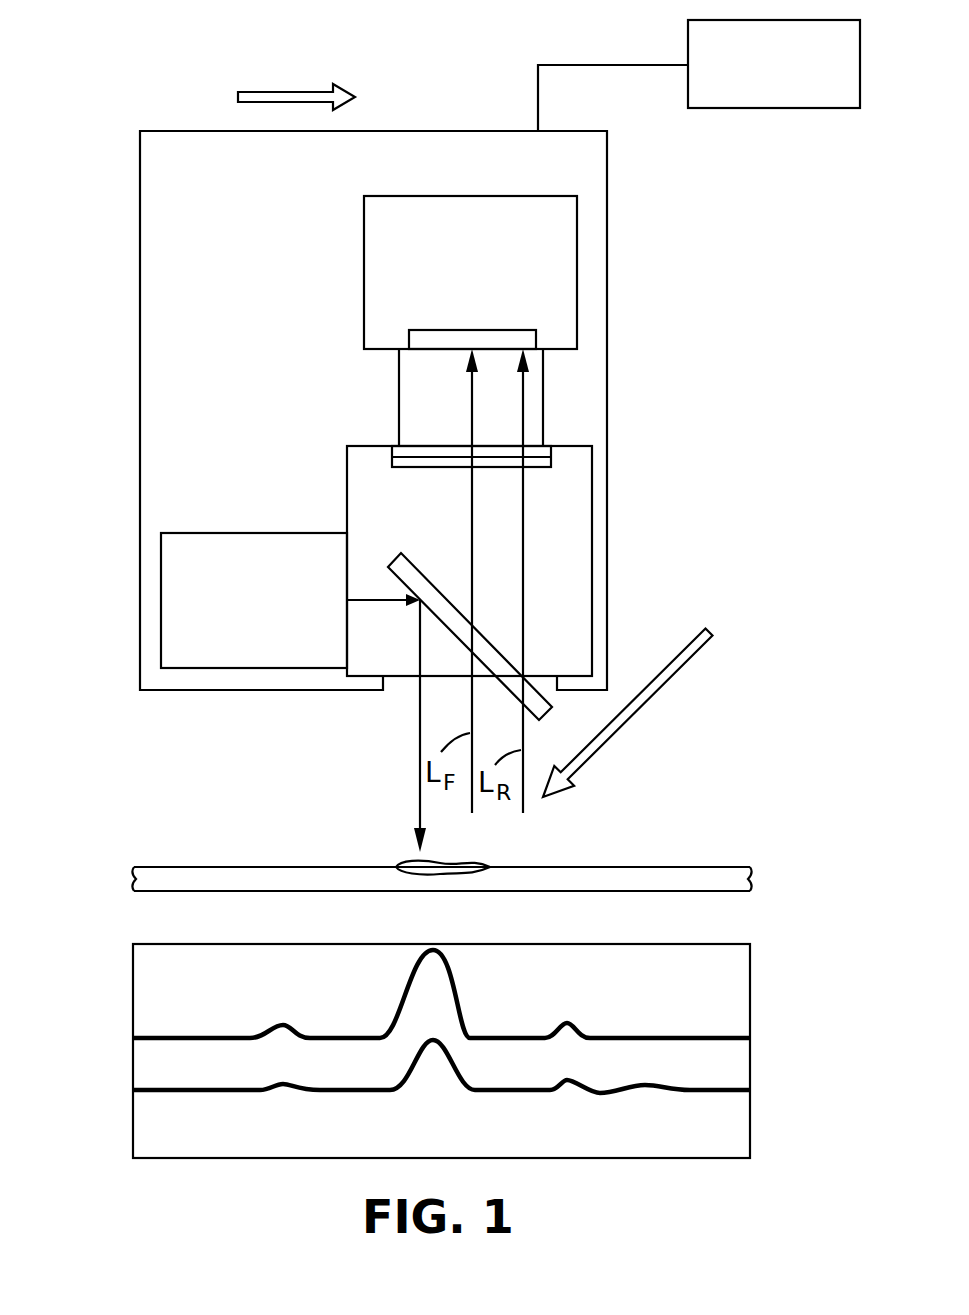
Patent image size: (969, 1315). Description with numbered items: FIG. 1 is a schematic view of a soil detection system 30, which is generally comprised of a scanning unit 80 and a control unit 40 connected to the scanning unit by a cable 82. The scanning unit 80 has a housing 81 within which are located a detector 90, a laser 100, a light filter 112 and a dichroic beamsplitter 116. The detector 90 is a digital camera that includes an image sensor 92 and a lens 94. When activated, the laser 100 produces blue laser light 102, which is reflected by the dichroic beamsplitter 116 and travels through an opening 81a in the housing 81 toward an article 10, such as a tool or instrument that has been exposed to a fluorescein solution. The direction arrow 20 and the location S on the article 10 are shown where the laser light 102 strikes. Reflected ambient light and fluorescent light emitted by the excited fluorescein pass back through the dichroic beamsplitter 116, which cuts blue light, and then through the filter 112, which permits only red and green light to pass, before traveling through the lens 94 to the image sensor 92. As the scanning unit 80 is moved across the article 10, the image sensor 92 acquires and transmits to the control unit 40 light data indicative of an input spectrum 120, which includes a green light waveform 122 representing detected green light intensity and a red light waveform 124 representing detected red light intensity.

The article 10 is at (710, 868).
The web travel direction arrow 20 is at (632, 712).
The soil detection system 30 is at (163, 100).
The control unit 40 is at (762, 108).
The scanning unit 80 is at (612, 310).
The housing 81 is at (607, 587).
The opening 81a is at (393, 690).
The cable 82 is at (640, 65).
The detector 90 is at (605, 238).
The image sensor 92 is at (441, 343).
The lens 94 is at (545, 415).
The laser 100 is at (238, 533).
The laser light 102 is at (420, 735).
The filter 112 is at (553, 448).
The dichroic beamsplitter 116 is at (395, 560).
The input spectrum 120 is at (752, 990).
The green light waveform 122 is at (165, 1037).
The red light waveform 124 is at (165, 1089).
The splice S is at (410, 866).